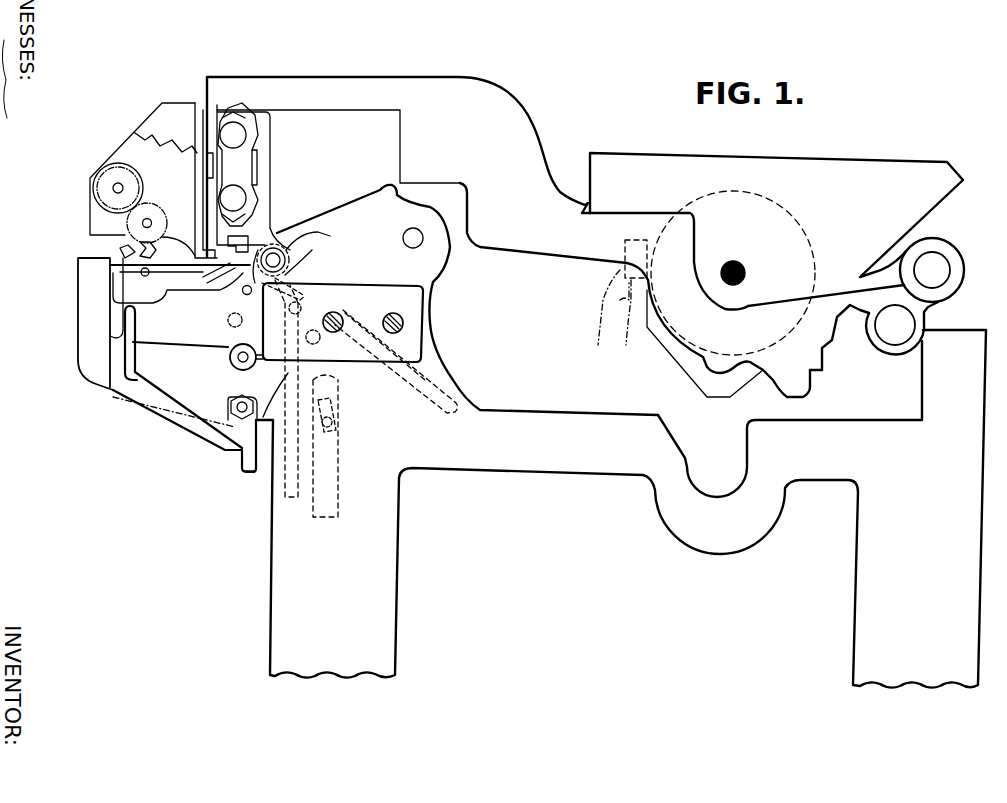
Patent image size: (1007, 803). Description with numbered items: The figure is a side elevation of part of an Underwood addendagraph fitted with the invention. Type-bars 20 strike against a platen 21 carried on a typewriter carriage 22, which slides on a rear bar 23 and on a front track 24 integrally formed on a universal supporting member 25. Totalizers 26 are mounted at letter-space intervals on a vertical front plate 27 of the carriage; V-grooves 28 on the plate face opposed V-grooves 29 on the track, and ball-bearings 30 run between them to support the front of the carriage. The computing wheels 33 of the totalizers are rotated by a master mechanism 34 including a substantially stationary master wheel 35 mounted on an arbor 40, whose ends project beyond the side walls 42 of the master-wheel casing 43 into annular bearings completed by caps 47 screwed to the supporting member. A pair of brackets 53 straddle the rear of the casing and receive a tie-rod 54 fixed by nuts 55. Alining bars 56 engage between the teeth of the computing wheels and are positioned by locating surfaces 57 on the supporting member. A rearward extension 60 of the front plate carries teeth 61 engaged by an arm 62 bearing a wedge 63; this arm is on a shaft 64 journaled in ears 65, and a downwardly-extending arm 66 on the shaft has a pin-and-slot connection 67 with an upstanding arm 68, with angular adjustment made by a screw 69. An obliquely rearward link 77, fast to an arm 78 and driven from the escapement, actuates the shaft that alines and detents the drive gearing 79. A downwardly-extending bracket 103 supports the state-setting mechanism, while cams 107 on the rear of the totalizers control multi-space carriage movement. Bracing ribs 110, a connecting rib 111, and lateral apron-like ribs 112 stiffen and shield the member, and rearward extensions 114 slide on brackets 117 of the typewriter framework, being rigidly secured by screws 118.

The type-bars 20 is at (598, 325).
The platen 21 is at (799, 236).
The typewriter carriage 22 is at (398, 167).
The bar 23 is at (895, 329).
The track 24 is at (276, 135).
The universal supporting member 25 is at (277, 174).
The totalizers 26 is at (140, 138).
The vertical front plate 27 is at (205, 130).
The V-grooves 28 is at (257, 165).
The V-grooves 29 is at (240, 116).
The ball-bearings 30 is at (233, 135).
The computing wheels 33 is at (133, 233).
The actuating or master mechanism 34 is at (93, 249).
The master wheel 35 is at (128, 253).
The arbor 40 is at (142, 310).
The side walls 42 is at (90, 348).
The master-wheel casing 43 is at (77, 295).
The caps 47 is at (113, 268).
The brackets 53 is at (229, 401).
The tie-rod 54 is at (241, 401).
The nuts 55 is at (262, 400).
The alining bars 56 is at (150, 250).
The locating surfaces 57 is at (168, 245).
The rearward extension 60 is at (236, 238).
The teeth 61 is at (278, 228).
The arm 62 is at (295, 256).
The wedge 63 is at (222, 274).
The shaft 64 is at (280, 262).
The ears or bearings 65 is at (313, 236).
The arm 66 is at (300, 294).
The pin-and-slot connection 67 is at (334, 423).
The upstanding arm 68 is at (340, 487).
The screw 69 is at (230, 290).
The link 77 is at (410, 380).
The arm 78 is at (328, 333).
The drive gearing 79 is at (141, 274).
The downwardly-extending bracket 103 is at (230, 360).
The cams 107 is at (205, 272).
The bracing ribs 110 is at (165, 397).
The rib 111 is at (245, 470).
The ribs 112 is at (108, 317).
The rearward extensions or brackets 114 is at (424, 345).
The brackets 117 is at (443, 272).
The screws 118 is at (395, 310).